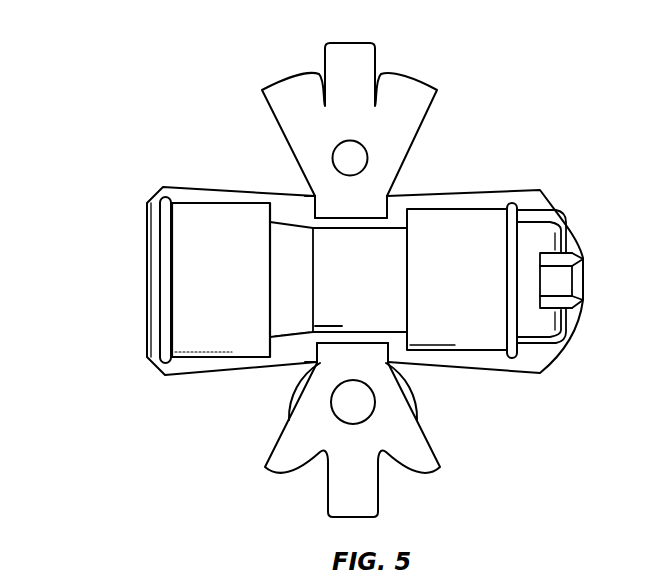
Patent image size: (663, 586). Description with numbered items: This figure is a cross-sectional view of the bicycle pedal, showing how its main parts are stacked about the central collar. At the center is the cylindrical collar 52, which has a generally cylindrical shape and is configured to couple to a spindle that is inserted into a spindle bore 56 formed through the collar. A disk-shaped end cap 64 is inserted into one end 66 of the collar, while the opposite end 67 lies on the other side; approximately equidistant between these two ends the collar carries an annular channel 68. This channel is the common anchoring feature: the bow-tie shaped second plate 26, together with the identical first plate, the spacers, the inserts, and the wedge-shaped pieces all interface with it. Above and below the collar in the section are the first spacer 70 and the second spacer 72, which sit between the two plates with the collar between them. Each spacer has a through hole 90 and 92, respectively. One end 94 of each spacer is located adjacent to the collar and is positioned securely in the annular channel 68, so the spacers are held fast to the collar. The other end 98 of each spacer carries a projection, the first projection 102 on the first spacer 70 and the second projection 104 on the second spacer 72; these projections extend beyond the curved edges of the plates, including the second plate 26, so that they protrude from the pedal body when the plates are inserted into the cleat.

The second plate 26 is at (416, 404).
The cylindrical collar 52 is at (502, 188).
The spindle bore 56 is at (187, 307).
The end cap 64 is at (578, 233).
The end of collar 66 is at (550, 351).
The end of collar 67 is at (156, 200).
The annular channel 68 is at (313, 192).
The first spacer 70 is at (435, 90).
The second spacer 72 is at (425, 463).
The through hole 90 is at (355, 158).
The through hole 92 is at (353, 402).
The end of spacer 94 is at (360, 212).
The other end of spacer 98 is at (360, 65).
The first projection 102 is at (372, 48).
The second projection 104 is at (347, 517).